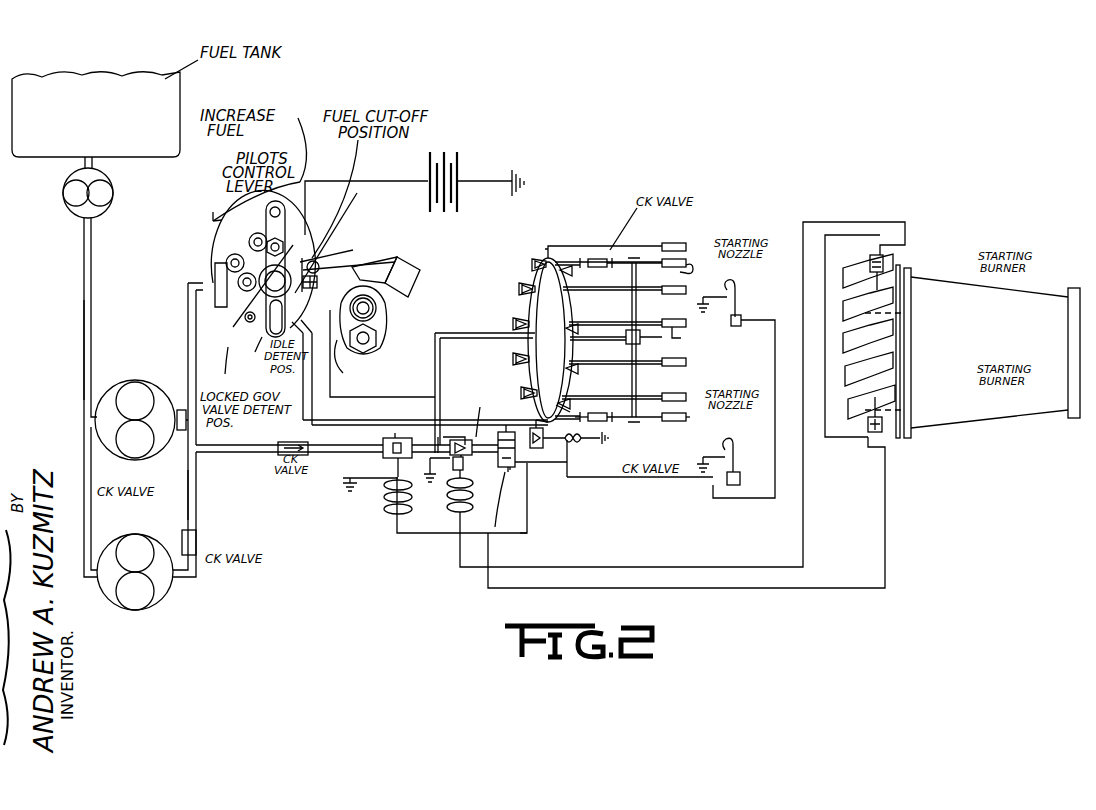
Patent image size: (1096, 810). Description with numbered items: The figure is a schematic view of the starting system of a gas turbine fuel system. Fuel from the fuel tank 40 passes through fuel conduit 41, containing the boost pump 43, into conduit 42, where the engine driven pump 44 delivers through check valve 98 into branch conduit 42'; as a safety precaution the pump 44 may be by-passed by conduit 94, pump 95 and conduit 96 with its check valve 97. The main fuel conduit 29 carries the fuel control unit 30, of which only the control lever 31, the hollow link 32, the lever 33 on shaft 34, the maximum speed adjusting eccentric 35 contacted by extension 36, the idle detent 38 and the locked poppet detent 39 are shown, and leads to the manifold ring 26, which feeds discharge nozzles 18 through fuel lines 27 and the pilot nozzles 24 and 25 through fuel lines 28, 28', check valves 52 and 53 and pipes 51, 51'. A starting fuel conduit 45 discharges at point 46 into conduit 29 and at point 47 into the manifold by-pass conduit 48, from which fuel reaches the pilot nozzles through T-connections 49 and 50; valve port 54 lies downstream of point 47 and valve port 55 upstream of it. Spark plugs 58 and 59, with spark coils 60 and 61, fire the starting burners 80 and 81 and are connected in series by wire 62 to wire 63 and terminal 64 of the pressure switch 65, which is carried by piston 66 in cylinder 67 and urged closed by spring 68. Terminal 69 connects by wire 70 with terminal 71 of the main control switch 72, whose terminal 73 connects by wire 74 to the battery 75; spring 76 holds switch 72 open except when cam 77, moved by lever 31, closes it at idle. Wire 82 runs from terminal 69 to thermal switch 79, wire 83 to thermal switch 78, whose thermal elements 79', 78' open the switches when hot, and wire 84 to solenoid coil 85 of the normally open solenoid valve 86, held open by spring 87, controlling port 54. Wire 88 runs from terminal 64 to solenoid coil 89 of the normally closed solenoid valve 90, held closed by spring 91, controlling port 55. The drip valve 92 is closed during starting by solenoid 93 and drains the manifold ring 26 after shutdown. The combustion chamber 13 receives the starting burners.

The starting burner combustion chamber 13 is at (1005, 413).
The discharge nozzles 18 is at (681, 338).
The nozzle 24 is at (692, 270).
The nozzle 25 is at (686, 418).
The manifold ring 26 is at (530, 312).
The fuel line 27 is at (560, 245).
The fuel line 28 is at (608, 321).
The fuel line 28' is at (583, 390).
The main fuel conduit 29 is at (296, 421).
The fuel control unit 30 is at (237, 249).
The control lever 31 is at (266, 220).
The hollow link 32 is at (340, 250).
The lever 33 is at (395, 292).
The shaft 34 is at (372, 316).
The maximum speed adjusting eccentric 35 is at (375, 346).
The extension 36 is at (343, 370).
The idle detent 38 is at (262, 337).
The locked poppet detent 39 is at (228, 347).
The fuel tank 40 is at (172, 110).
The fuel conduit 41 is at (92, 279).
The conduit 42 is at (135, 402).
The branch conduit 42' is at (173, 430).
The boost pump 43 is at (113, 193).
The engine driven pump 44 is at (140, 398).
The starting fuel conduit 45 is at (244, 454).
The discharge point 46 is at (480, 407).
The discharge point 47 is at (427, 437).
The manifold by-pass conduit 48 is at (441, 351).
The T-connection 49 is at (632, 306).
The T-connection 50 is at (637, 380).
The pipe 51 is at (679, 314).
The pipe 51' is at (636, 430).
The check valve 52 is at (602, 258).
The check valve 53 is at (597, 423).
The valve port 54 is at (443, 437).
The valve port 55 is at (395, 433).
The spark plug 58 is at (738, 290).
The spark plug 59 is at (738, 449).
The spark coil 60 is at (740, 327).
The spark coil 61 is at (740, 481).
The wire 62 is at (775, 367).
The wire 63 is at (650, 479).
The terminal 64 is at (512, 468).
The pressure switch 65 is at (510, 472).
The piston 66 is at (540, 421).
The cylinder 67 is at (517, 450).
The spring 68 is at (527, 533).
The terminal 69 is at (507, 472).
The wire 70 is at (364, 398).
The terminal 71 is at (312, 336).
The main control switch 72 is at (318, 286).
The terminal 73 is at (355, 262).
The wire 74 is at (371, 181).
The battery 75 is at (447, 156).
The spring 76 is at (386, 265).
The cam 77 is at (357, 193).
The thermal switch 78 is at (909, 239).
The thermal element 78' is at (916, 315).
The thermal switch 79 is at (863, 449).
The thermal element 79' is at (917, 410).
The starting burner 80 is at (885, 293).
The starting burner 81 is at (885, 397).
The wire 82 is at (703, 590).
The wire 83 is at (842, 440).
The wire 84 is at (832, 222).
The solenoid coil 85 is at (457, 508).
The solenoid valve 86 is at (450, 455).
The spring 87 is at (498, 458).
The wire 88 is at (403, 531).
The solenoid coil 89 is at (383, 512).
The solenoid valve 90 is at (385, 453).
The spring 91 is at (372, 478).
The drip valve 92 is at (552, 448).
The solenoid 93 is at (580, 444).
The conduit 94 is at (84, 473).
The pump 95 is at (138, 604).
The conduit 96 is at (197, 510).
The check valve 97 is at (197, 542).
The check valve 98 is at (180, 410).